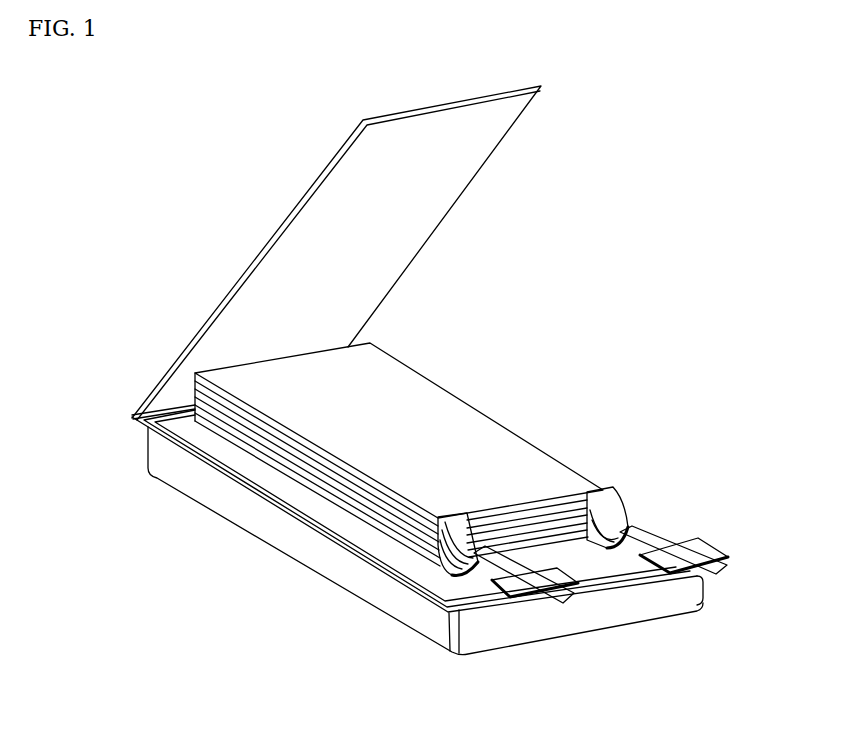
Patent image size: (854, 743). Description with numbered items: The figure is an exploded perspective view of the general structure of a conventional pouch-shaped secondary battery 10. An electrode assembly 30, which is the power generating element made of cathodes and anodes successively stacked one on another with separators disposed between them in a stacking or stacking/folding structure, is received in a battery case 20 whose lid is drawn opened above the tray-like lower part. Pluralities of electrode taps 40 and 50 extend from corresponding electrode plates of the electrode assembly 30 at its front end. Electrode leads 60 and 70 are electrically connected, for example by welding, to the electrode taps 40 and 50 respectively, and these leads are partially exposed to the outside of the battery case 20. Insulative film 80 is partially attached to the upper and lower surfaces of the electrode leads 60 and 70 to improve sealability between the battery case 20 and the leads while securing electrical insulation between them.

The pouch-shaped secondary battery 10 is at (140, 179).
The battery case 20 is at (130, 417).
The electrode assembly 30 is at (496, 364).
The electrode tap 40 is at (450, 573).
The electrode tap 50 is at (628, 527).
The electrode lead 60 is at (450, 606).
The electrode lead 70 is at (695, 545).
The insulative film 80 is at (512, 598).